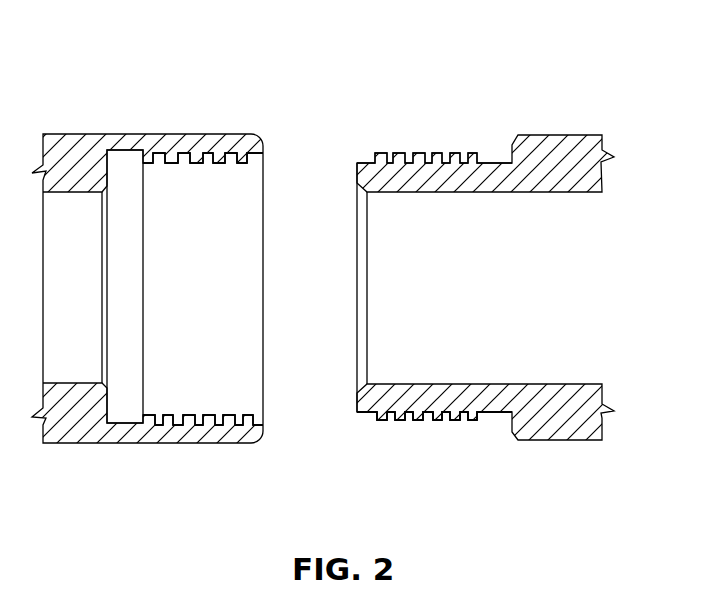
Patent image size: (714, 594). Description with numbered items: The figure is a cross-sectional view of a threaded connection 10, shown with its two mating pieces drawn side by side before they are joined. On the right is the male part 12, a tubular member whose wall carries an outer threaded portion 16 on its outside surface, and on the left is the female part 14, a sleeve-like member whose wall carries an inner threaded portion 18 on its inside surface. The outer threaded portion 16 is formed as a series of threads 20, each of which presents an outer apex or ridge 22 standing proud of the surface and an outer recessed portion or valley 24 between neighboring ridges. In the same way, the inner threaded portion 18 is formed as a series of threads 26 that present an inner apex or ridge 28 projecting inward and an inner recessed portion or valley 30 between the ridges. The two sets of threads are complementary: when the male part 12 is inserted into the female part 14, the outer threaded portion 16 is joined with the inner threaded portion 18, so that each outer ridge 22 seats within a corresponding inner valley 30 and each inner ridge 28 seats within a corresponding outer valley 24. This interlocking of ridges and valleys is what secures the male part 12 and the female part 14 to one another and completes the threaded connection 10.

The threaded connection 10 is at (325, 68).
The male part 12 is at (577, 134).
The female part 14 is at (65, 133).
The outer threaded portion 16 is at (417, 152).
The inner threaded portion 18 is at (220, 164).
The threads 20 is at (433, 452).
The outer ridge 22 is at (471, 421).
The outer valley 24 is at (391, 420).
The threads 26 is at (188, 196).
The inner ridge 28 is at (204, 415).
The inner valley 30 is at (198, 418).